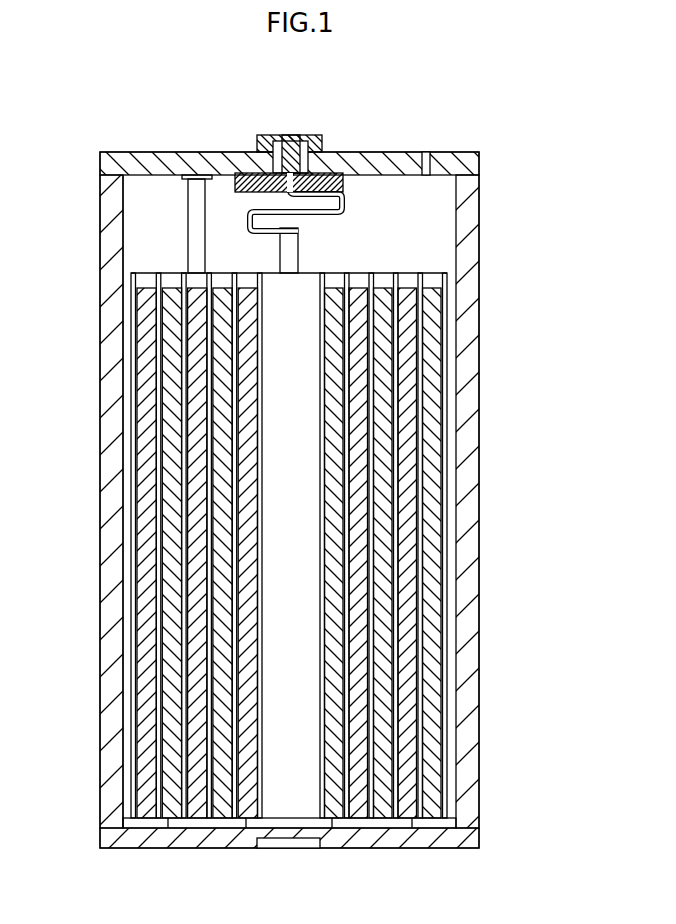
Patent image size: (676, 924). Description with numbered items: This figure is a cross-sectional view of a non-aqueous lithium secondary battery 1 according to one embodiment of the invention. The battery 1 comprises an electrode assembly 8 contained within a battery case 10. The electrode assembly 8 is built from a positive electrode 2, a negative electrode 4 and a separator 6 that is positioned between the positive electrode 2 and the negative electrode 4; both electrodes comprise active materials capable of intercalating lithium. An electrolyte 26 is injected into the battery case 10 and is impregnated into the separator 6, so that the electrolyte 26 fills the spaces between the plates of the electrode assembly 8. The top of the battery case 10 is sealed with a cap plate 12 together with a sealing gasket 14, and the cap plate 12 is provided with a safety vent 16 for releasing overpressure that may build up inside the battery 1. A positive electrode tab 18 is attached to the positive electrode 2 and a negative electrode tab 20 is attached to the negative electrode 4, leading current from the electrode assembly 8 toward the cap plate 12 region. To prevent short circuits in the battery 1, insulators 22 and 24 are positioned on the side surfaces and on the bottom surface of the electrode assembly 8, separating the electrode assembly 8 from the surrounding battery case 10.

The battery 1 is at (531, 266).
The positive electrode 2 is at (433, 718).
The negative electrode 4 is at (168, 702).
The separator 6 is at (157, 775).
The electrode assembly 8 is at (294, 510).
The battery case 10 is at (110, 315).
The cap plate 12 is at (377, 160).
The sealing gasket 14 is at (263, 136).
The safety vent 16 is at (425, 160).
The positive electrode tab 18 is at (242, 173).
The negative electrode tab 20 is at (292, 135).
The insulator 22 is at (123, 447).
The insulator 24 is at (207, 823).
The electrolyte 26 is at (422, 748).